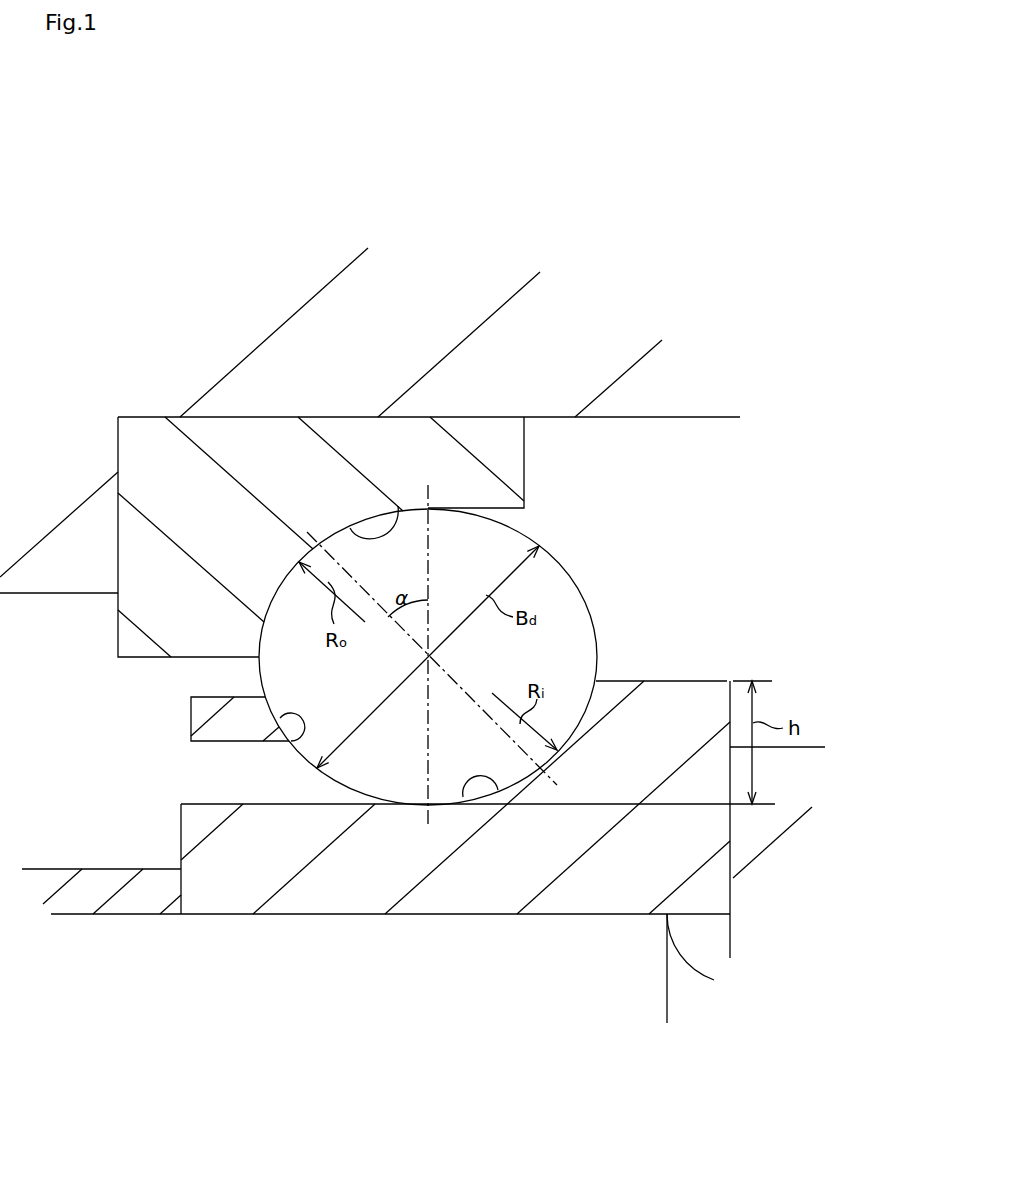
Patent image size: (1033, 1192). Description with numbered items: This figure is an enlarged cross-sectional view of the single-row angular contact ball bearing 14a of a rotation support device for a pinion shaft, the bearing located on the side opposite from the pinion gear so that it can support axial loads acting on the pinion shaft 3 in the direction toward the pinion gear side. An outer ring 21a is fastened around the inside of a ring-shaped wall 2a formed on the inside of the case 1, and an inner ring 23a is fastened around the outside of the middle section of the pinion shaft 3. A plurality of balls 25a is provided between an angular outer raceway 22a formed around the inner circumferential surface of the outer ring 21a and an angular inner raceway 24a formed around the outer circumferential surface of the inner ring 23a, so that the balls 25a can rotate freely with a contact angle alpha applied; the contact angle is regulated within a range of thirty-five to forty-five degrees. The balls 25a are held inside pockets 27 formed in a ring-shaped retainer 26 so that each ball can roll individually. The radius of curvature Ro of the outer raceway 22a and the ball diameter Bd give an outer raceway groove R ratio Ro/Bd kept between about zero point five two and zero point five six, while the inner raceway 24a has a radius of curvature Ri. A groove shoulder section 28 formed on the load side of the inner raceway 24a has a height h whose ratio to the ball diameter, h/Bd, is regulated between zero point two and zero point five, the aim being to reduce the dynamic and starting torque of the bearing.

The case 1 is at (568, 307).
The ring-shaped wall 2a is at (582, 360).
The pinion shaft 3 is at (120, 957).
The single-row angular contact ball bearing 14a is at (605, 502).
The outer ring 21a is at (258, 435).
The outer raceway 22a is at (398, 506).
The inner ring 23a is at (357, 893).
The inner raceway 24a is at (463, 797).
The balls 25a is at (567, 623).
The retainer 26 is at (200, 704).
The pockets 27 is at (291, 741).
The groove shoulder section 28 is at (657, 695).